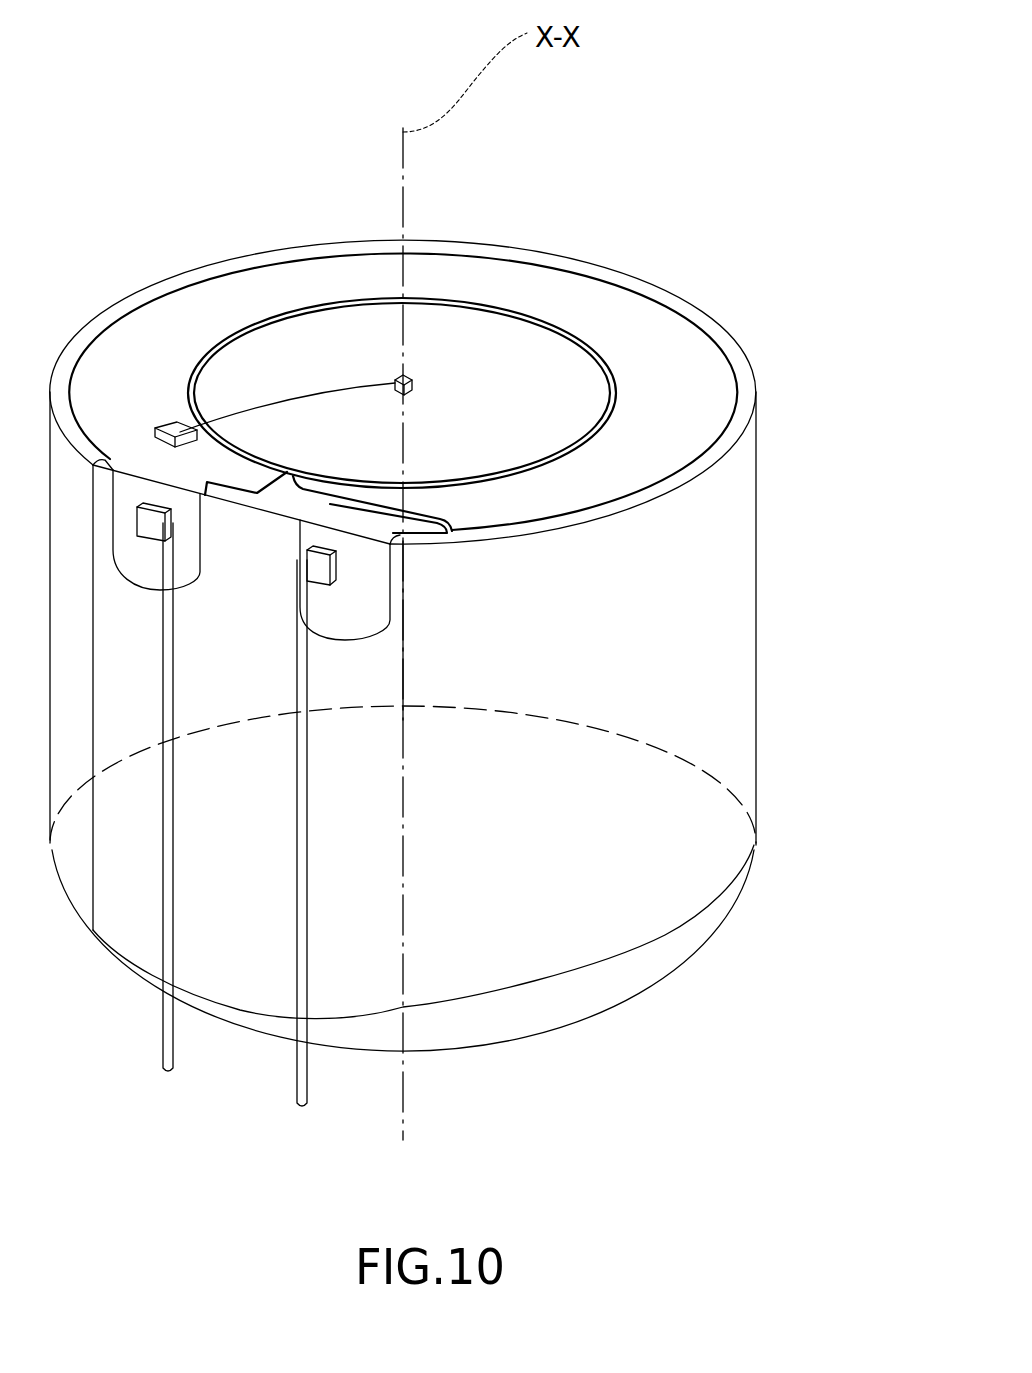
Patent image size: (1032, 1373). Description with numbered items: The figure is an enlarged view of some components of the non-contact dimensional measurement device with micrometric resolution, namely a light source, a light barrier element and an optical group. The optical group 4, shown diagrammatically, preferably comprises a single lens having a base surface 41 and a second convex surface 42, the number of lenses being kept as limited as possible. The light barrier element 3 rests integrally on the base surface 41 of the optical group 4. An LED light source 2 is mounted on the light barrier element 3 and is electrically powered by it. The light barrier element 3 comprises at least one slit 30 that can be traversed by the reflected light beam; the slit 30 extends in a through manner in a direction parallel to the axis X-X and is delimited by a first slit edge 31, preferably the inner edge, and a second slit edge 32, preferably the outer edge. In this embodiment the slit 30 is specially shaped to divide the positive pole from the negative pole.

The LED light source 2 is at (408, 375).
The light barrier element 3 is at (682, 393).
The slit 30 is at (612, 383).
The first slit edge 31 is at (190, 378).
The second slit edge 32 is at (173, 425).
The optical group 4 is at (788, 632).
The base surface 41 is at (723, 442).
The second convex surface 42 is at (520, 1040).